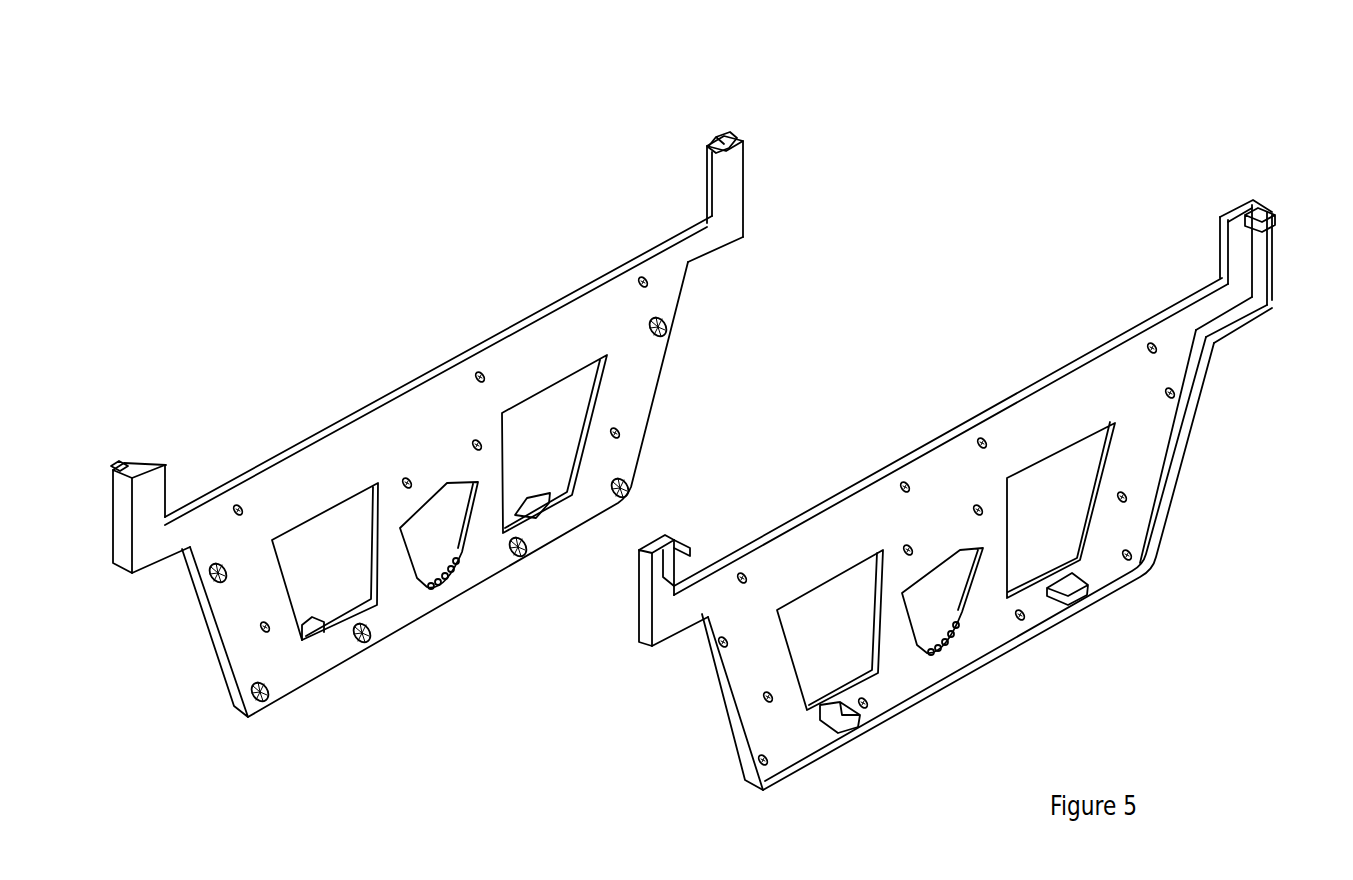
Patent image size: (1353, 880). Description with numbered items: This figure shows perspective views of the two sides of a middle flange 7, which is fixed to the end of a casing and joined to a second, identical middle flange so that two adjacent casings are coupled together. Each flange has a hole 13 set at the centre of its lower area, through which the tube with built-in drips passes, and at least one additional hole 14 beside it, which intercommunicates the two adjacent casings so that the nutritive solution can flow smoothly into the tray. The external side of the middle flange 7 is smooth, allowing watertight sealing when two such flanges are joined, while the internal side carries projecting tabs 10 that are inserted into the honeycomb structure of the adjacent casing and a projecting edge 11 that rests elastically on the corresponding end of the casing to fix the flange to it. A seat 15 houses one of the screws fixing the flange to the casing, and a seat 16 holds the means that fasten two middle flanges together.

The middle flange 7 is at (733, 262).
The projecting tabs 10 is at (708, 146).
The projecting edge 11 is at (733, 140).
The hole 13 is at (437, 556).
The additional hole 14 is at (348, 535).
The seat 15 is at (203, 582).
The seat 16 is at (398, 398).